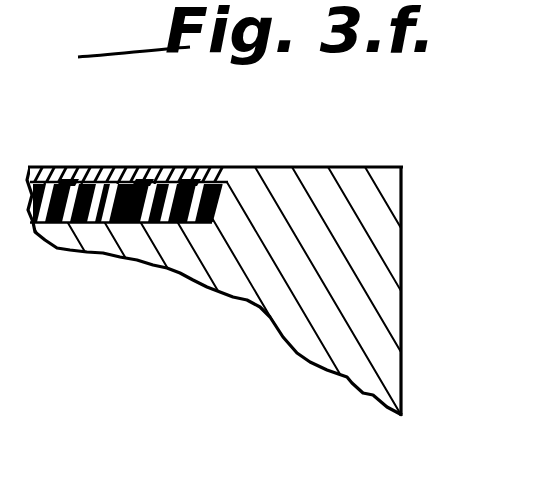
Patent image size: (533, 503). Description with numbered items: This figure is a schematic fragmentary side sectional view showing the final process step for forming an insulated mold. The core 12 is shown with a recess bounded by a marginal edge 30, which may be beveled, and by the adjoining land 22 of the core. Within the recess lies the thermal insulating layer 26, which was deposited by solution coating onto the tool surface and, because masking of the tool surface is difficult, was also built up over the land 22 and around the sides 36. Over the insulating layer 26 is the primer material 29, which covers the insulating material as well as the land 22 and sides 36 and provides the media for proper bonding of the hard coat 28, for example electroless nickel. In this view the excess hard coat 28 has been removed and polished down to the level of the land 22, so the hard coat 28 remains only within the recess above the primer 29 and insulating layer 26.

The core 12 is at (290, 311).
The land 22 is at (343, 168).
The thermal insulating layer 26 is at (101, 212).
The hard coat 28 is at (152, 173).
The primer material 29 is at (98, 190).
The marginal edge 30 is at (211, 206).
The sides 36 is at (402, 282).